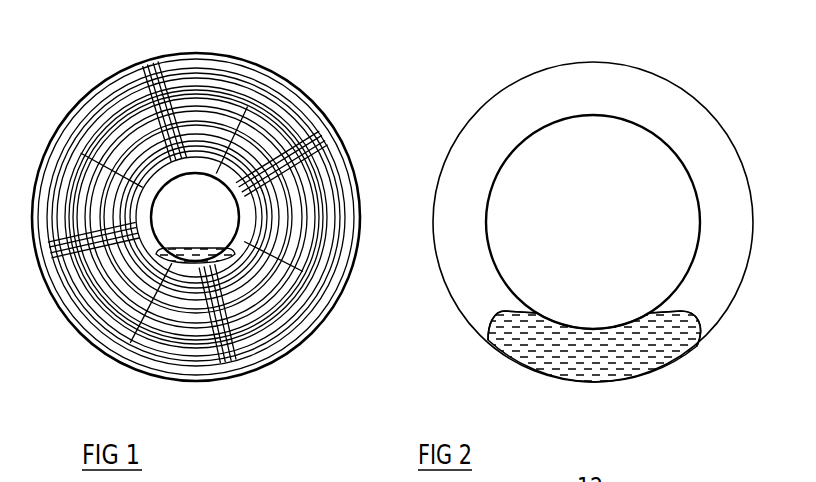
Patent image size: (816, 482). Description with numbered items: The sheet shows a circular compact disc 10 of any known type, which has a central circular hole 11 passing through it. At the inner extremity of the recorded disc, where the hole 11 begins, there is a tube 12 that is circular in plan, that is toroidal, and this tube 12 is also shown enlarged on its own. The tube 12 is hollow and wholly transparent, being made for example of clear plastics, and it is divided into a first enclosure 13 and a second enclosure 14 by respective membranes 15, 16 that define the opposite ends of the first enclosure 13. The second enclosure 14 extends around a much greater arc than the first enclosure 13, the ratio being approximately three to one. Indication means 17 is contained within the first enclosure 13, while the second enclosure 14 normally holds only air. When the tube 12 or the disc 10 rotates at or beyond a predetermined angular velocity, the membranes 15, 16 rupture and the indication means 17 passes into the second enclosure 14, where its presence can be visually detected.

In FIG. 1, the compact disc 10 is at (342, 128).
In FIG. 1, the central circular hole 11 is at (214, 184).
In FIG. 1, the tube 12 is at (247, 212).
In FIG. 2, the tube 12 is at (716, 122).
In FIG. 2, the first enclosure 13 is at (680, 357).
In FIG. 2, the second enclosure 14 is at (729, 221).
In FIG. 2, the membrane 15 is at (493, 316).
In FIG. 2, the membrane 16 is at (700, 318).
In FIG. 2, the indication means 17 is at (572, 348).